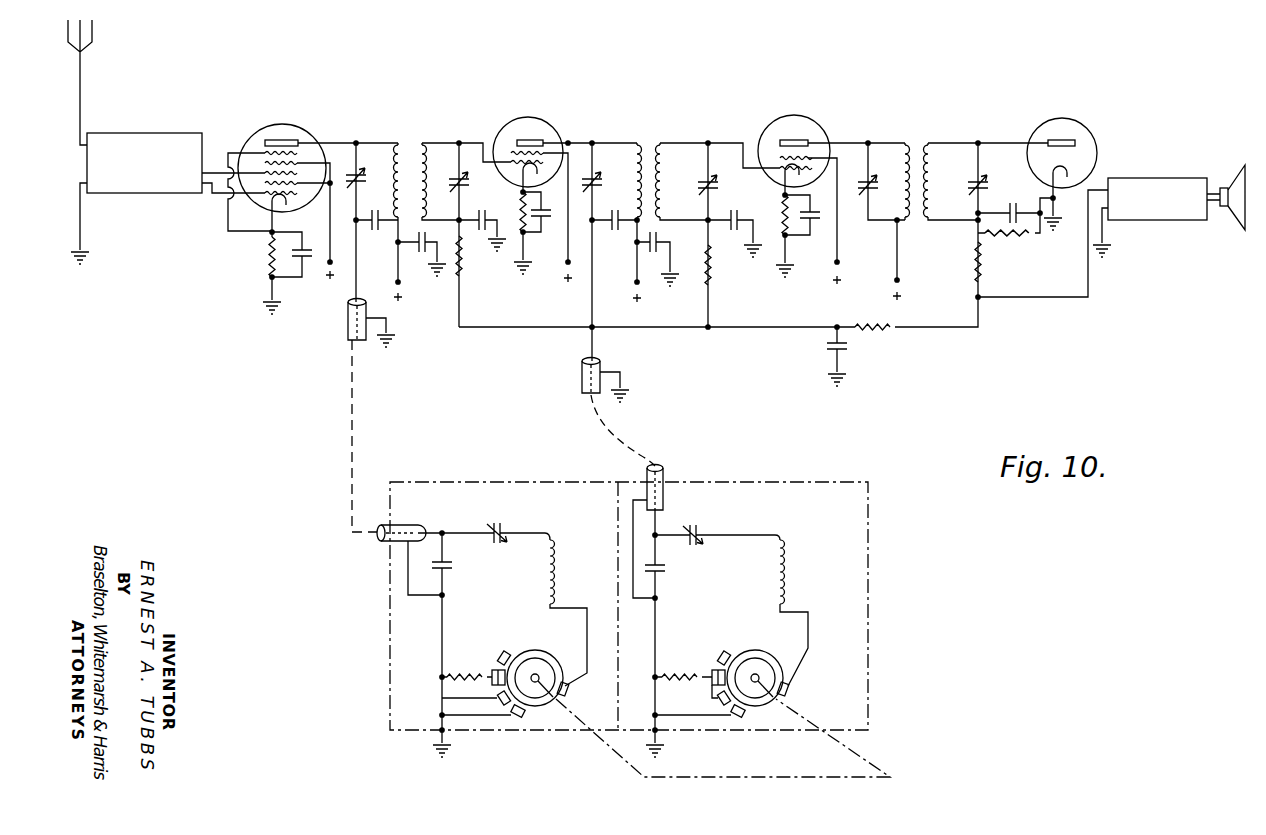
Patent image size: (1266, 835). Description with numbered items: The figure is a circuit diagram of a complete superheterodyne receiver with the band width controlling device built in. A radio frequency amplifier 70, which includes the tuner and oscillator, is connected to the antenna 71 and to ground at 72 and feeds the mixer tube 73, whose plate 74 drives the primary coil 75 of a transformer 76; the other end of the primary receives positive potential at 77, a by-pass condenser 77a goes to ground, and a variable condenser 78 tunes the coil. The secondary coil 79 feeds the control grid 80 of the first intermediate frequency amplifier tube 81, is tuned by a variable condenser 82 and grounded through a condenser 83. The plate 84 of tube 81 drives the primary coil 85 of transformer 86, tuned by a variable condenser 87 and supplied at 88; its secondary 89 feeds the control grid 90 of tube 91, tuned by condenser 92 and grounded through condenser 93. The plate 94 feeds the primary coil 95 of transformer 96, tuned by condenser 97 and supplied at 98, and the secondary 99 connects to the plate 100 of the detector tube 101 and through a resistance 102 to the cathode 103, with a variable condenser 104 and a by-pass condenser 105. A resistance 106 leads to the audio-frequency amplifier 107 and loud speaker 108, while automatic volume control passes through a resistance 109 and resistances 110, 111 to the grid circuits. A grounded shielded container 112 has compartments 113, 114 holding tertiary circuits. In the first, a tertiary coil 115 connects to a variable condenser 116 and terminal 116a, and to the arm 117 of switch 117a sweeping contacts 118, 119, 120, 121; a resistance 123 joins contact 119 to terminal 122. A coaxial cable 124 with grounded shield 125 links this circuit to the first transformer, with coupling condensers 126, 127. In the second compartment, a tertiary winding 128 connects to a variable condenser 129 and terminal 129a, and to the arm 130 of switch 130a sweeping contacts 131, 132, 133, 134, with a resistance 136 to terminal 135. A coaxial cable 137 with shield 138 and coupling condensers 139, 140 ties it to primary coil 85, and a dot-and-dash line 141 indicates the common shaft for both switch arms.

The radio frequency amplifier 70 is at (156, 131).
The antenna 71 is at (81, 89).
The ground 72 is at (89, 252).
The mixer tube 73 is at (281, 180).
The plate 74 is at (284, 140).
The primary coil 75 is at (392, 168).
The transformer 76 is at (424, 126).
The positive potential source 77 is at (397, 281).
The by-pass condenser 77a is at (430, 254).
The variable condenser 78 is at (366, 168).
The secondary coil 79 is at (428, 160).
The control grid 80 is at (543, 183).
The first intermediate frequency amplifier tube 81 is at (541, 127).
The variable condenser 82 is at (463, 176).
The condenser 83 is at (489, 223).
The plate 84 is at (546, 139).
The primary coil 85 is at (633, 162).
The transformer 86 is at (658, 128).
The variable condenser 87 is at (606, 193).
The positive potential source 88 is at (636, 287).
The secondary 89 is at (668, 168).
The control grid 90 is at (782, 167).
The tube 91 is at (801, 184).
The variable condenser 92 is at (716, 191).
The condenser 93 is at (743, 221).
The plate 94 is at (808, 141).
The primary coil 95 is at (890, 160).
The transformer 96 is at (928, 127).
The variable condenser 97 is at (857, 200).
The positive potential source 98 is at (896, 282).
The secondary 99 is at (937, 160).
The plate 100 is at (1088, 141).
The detector tube 101 is at (1082, 124).
The resistance 102 is at (1009, 241).
The cathode 103 is at (1068, 172).
The variable condenser 104 is at (958, 200).
The by-pass condenser 105 is at (1013, 209).
The resistance 106 is at (976, 268).
The audio-frequency amplifier 107 is at (1162, 176).
The loud speaker 108 is at (1238, 170).
The resistance 109 is at (890, 333).
The resistance 110 is at (462, 263).
The resistance 111 is at (712, 281).
The shielded container 112 is at (518, 475).
The compartment 113 is at (438, 497).
The compartment 114 is at (816, 501).
The tertiary coil 115 is at (556, 573).
The variable condenser 116 is at (518, 511).
The terminal 116a is at (458, 512).
The arm 117 is at (561, 640).
The switch 117a is at (541, 707).
The contact 118 is at (505, 651).
The contact 119 is at (492, 673).
The contact 120 is at (500, 704).
The contact 121 is at (518, 719).
The terminal 122 is at (440, 597).
The resistance 123 is at (452, 680).
The coaxial cable 124 is at (355, 419).
The shield 125 is at (348, 331).
The coupling condenser 126 is at (389, 218).
The coupling condenser 127 is at (453, 566).
The tertiary winding 128 is at (792, 577).
The variable condenser 129 is at (702, 523).
The terminal 129a is at (659, 533).
The arm 130 is at (767, 663).
The switch 130a is at (796, 676).
The contact 131 is at (733, 651).
The contact 132 is at (713, 672).
The contact 133 is at (726, 707).
The contact 134 is at (746, 719).
The terminal 135 is at (660, 598).
The resistance 136 is at (667, 679).
The coaxial cable 137 is at (620, 433).
The shield 138 is at (581, 375).
The coupling condenser 139 is at (668, 572).
The coupling condenser 140 is at (606, 232).
The light source 141 is at (793, 778).